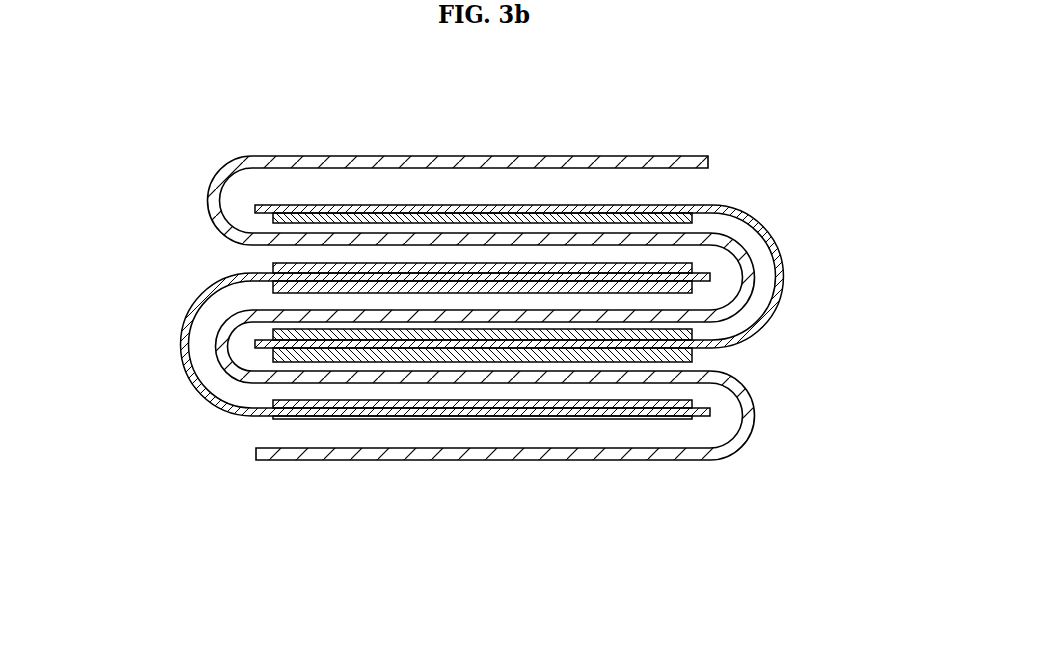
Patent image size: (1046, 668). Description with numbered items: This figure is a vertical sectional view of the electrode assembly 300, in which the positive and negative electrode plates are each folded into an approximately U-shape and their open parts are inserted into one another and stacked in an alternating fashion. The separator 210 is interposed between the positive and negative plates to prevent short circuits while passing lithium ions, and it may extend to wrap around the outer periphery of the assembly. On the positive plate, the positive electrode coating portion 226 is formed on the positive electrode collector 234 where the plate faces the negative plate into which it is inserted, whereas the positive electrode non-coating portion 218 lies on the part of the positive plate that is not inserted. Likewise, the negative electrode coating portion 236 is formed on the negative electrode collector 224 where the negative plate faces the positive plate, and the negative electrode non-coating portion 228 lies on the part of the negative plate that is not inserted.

The separator 210 is at (592, 156).
The positive electrode non-coating portion 218 is at (183, 330).
The negative electrode collector 224 is at (396, 205).
The positive electrode coating portion 226 is at (692, 267).
The negative electrode non-coating portion 228 is at (781, 243).
The positive electrode collector 234 is at (710, 413).
The negative electrode coating portion 236 is at (477, 207).
The electrode assembly 300 is at (562, 497).